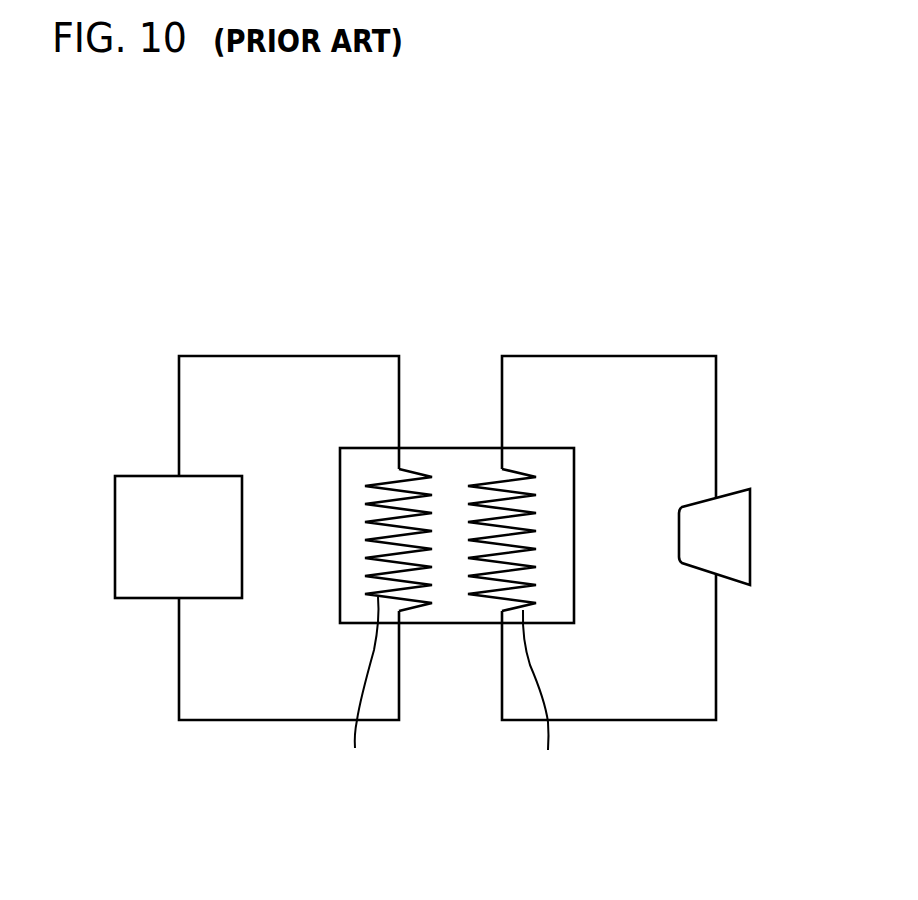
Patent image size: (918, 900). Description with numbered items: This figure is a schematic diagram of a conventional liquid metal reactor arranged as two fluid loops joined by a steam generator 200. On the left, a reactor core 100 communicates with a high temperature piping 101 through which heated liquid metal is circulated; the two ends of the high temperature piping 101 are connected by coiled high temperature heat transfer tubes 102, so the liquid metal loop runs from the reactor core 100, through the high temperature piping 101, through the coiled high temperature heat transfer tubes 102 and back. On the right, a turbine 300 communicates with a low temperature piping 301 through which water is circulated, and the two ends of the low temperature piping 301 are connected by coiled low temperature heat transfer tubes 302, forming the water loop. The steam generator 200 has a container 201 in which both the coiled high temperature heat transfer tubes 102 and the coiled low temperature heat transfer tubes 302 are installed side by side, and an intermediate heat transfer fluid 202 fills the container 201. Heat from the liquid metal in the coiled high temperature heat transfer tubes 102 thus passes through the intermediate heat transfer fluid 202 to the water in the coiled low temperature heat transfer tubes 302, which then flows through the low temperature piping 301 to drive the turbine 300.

The reactor core 100 is at (122, 565).
The high temperature piping 101 is at (267, 721).
The coiled high temperature heat transfer tubes 102 is at (362, 684).
The steam generator 200 is at (445, 632).
The container 201 is at (425, 448).
The intermediate heat transfer fluid 202 is at (468, 460).
The turbine 300 is at (747, 542).
The low temperature piping 301 is at (610, 721).
The coiled low temperature heat transfer tubes 302 is at (542, 693).